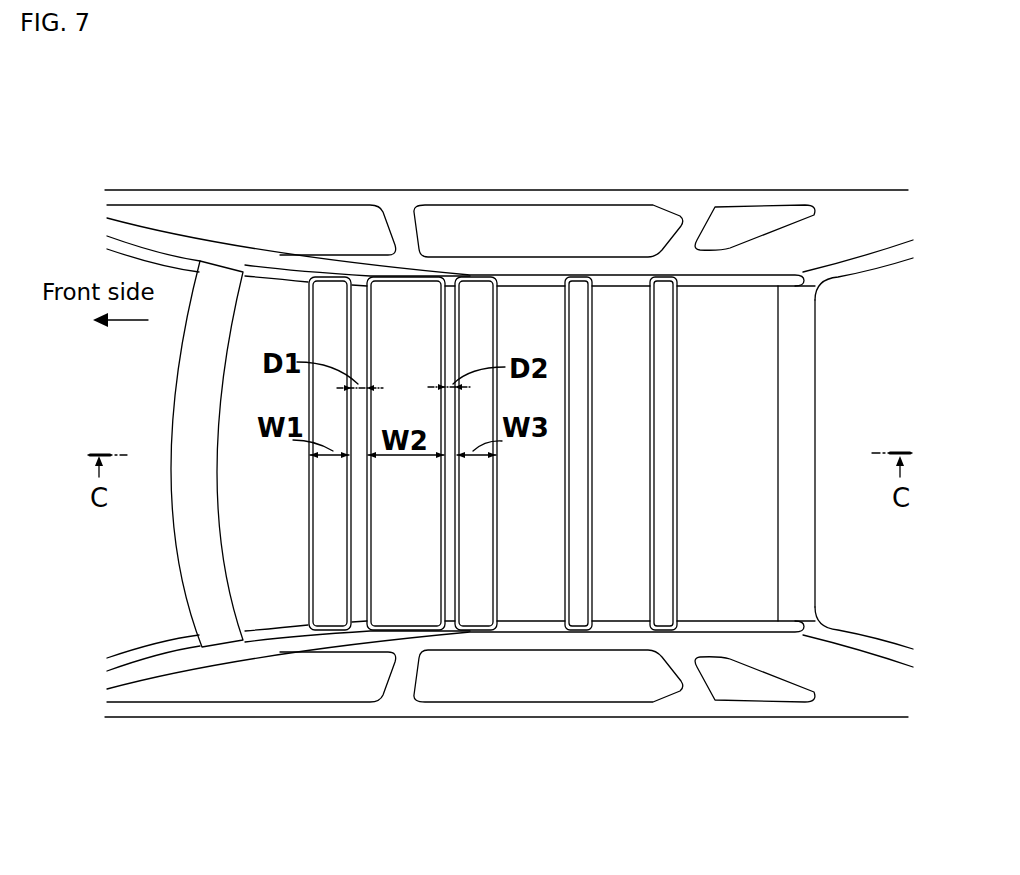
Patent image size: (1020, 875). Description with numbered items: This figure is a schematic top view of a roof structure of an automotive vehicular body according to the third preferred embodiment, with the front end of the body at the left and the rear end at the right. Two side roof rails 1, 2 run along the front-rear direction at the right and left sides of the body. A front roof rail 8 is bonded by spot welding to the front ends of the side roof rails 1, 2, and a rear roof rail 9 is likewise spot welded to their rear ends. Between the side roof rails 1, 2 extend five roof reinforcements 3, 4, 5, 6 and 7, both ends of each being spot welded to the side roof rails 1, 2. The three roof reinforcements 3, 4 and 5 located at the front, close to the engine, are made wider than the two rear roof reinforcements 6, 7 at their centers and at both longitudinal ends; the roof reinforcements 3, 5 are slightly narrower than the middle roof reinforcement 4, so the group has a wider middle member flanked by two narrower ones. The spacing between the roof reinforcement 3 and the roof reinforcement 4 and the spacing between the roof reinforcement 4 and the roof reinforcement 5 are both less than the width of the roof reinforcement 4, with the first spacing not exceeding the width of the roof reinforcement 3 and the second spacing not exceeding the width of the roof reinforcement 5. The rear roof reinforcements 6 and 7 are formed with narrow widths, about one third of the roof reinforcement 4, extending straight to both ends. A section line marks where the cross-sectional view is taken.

The side roof rail 1 is at (280, 272).
The side roof rail 2 is at (268, 634).
The roof reinforcement 3 is at (330, 293).
The roof reinforcement 4 is at (403, 293).
The roof reinforcement 5 is at (478, 293).
The roof reinforcement 6 is at (577, 293).
The roof reinforcement 7 is at (663, 293).
The front roof rail 8 is at (176, 382).
The rear roof rail 9 is at (786, 352).